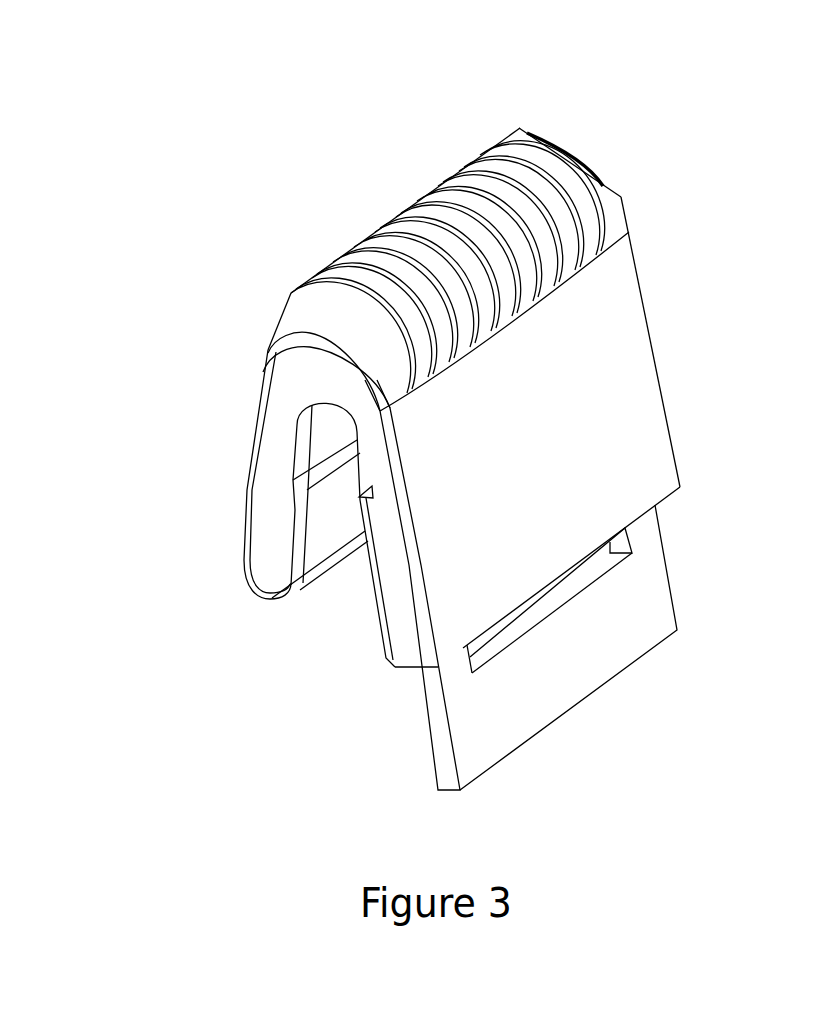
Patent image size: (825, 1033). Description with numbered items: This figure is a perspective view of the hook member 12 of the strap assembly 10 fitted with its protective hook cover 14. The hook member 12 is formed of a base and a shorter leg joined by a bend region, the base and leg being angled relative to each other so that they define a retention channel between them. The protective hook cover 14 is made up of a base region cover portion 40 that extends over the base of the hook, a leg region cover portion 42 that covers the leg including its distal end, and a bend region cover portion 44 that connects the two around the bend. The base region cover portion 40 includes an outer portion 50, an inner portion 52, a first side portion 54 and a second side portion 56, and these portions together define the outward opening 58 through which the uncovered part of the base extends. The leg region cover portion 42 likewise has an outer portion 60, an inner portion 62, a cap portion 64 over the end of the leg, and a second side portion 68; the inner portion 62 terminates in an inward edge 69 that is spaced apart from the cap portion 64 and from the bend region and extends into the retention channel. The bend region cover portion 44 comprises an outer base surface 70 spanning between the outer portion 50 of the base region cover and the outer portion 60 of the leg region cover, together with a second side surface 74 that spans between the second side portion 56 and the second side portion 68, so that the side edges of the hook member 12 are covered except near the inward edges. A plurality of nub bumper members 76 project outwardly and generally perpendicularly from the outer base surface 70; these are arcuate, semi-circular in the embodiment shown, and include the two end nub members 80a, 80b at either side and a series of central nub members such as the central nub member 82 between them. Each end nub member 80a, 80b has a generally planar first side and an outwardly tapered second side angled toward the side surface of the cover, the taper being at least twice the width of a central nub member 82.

The strap assembly 10 is at (737, 331).
The hook member 12 is at (176, 483).
The protective hook cover 14 is at (664, 595).
The base region cover portion 40 is at (645, 282).
The leg region cover portion 42 is at (244, 554).
The bend region cover portion 44 is at (262, 342).
The outer portion 50 is at (654, 461).
The inner portion 52 is at (380, 609).
The first side portion 54 is at (657, 363).
The second side portion 56 is at (400, 643).
The outward opening 58 is at (406, 670).
The outer portion 60 is at (244, 518).
The inner portion 62 is at (322, 527).
The cap portion 64 is at (271, 602).
The second side portion 68 is at (252, 572).
The inward edge 69 is at (306, 470).
The outer base surface 70 is at (588, 248).
The second side surface 74 is at (312, 386).
The nub bumper members 76 is at (318, 232).
The end nub member 80a is at (560, 148).
The end nub member 80b is at (310, 304).
The central nub member 82 is at (421, 195).